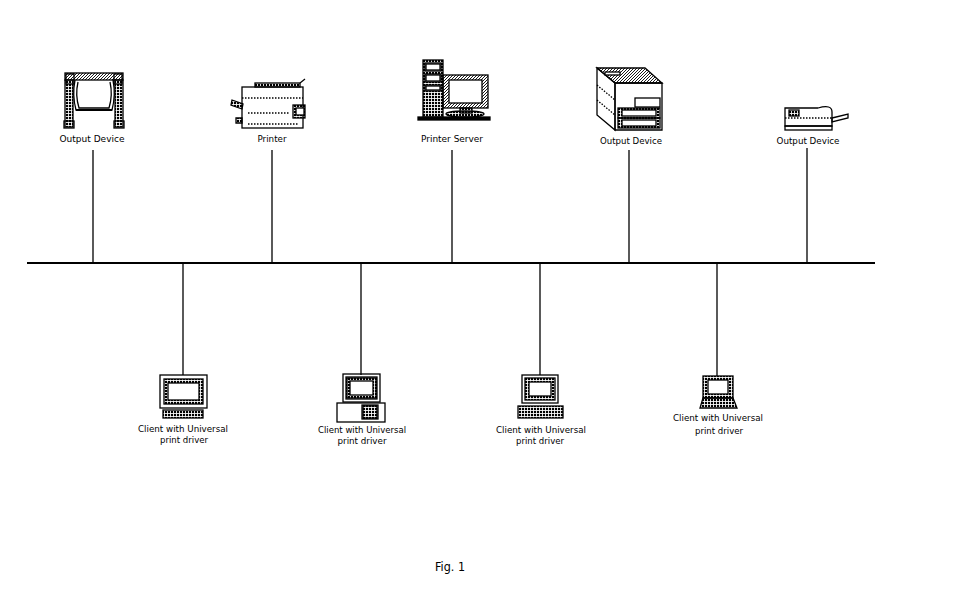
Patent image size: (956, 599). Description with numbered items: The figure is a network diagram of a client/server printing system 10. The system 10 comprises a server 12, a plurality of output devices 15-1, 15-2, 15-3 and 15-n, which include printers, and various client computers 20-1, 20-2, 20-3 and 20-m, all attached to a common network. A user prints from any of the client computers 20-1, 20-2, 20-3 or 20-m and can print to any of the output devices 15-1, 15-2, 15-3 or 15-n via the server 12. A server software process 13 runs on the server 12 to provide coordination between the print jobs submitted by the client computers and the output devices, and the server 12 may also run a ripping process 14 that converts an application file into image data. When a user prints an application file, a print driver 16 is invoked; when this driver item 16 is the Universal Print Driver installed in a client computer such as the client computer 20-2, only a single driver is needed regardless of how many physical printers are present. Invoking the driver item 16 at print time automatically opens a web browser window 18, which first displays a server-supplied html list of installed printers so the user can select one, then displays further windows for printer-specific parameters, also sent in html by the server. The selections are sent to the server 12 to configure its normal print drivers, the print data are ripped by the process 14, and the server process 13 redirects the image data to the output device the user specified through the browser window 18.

The system 10 is at (421, 81).
The server 12 is at (423, 60).
The server software process 13 is at (423, 63).
The ripping process 14 is at (421, 96).
The output device 15-1 is at (63, 74).
The output device 15-2 is at (243, 84).
The output device 15-3 is at (597, 68).
The output device 15-n is at (784, 109).
The print driver 16 is at (369, 369).
The web browser window 18 is at (341, 389).
The client computer 20-1 is at (157, 387).
The client computer 20-2 is at (372, 368).
The client computer 20-3 is at (565, 389).
The client computer 20-m is at (737, 387).